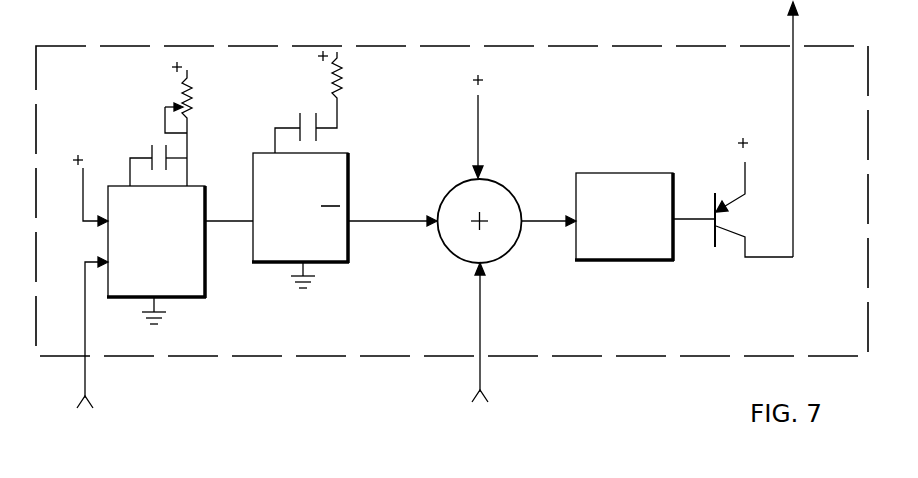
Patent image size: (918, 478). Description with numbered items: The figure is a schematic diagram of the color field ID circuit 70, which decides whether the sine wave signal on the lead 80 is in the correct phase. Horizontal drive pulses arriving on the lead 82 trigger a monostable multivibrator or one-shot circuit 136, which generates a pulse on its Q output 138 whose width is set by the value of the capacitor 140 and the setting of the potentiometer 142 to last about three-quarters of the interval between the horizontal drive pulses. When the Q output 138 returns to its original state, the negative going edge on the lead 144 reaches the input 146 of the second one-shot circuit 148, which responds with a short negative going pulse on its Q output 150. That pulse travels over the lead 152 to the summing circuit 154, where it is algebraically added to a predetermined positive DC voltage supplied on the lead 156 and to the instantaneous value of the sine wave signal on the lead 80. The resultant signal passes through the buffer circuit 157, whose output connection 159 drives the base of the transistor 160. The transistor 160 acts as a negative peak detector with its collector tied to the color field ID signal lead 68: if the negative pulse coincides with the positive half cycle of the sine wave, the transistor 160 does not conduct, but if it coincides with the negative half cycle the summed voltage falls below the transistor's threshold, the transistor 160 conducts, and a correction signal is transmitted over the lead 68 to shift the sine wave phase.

The color field ID circuit 70 is at (260, 46).
The color field ID signal lead 68 is at (794, 30).
The potentiometer 142 is at (190, 97).
The capacitor 140 is at (150, 151).
The monostable multivibrator or one-shot circuit 136 is at (176, 300).
The Q output 138 is at (207, 224).
The lead 144 is at (233, 207).
The input 146 is at (248, 225).
The second one-shot circuit 148 is at (322, 264).
The Q output 150 is at (349, 222).
The lead 152 is at (410, 220).
The summing circuit 154 is at (438, 239).
The lead 156 is at (480, 147).
The buffer circuit 157 is at (584, 172).
The buffer output line 159 is at (676, 223).
The transistor 160 is at (728, 238).
The lead 80 is at (482, 365).
The lead 82 is at (86, 363).